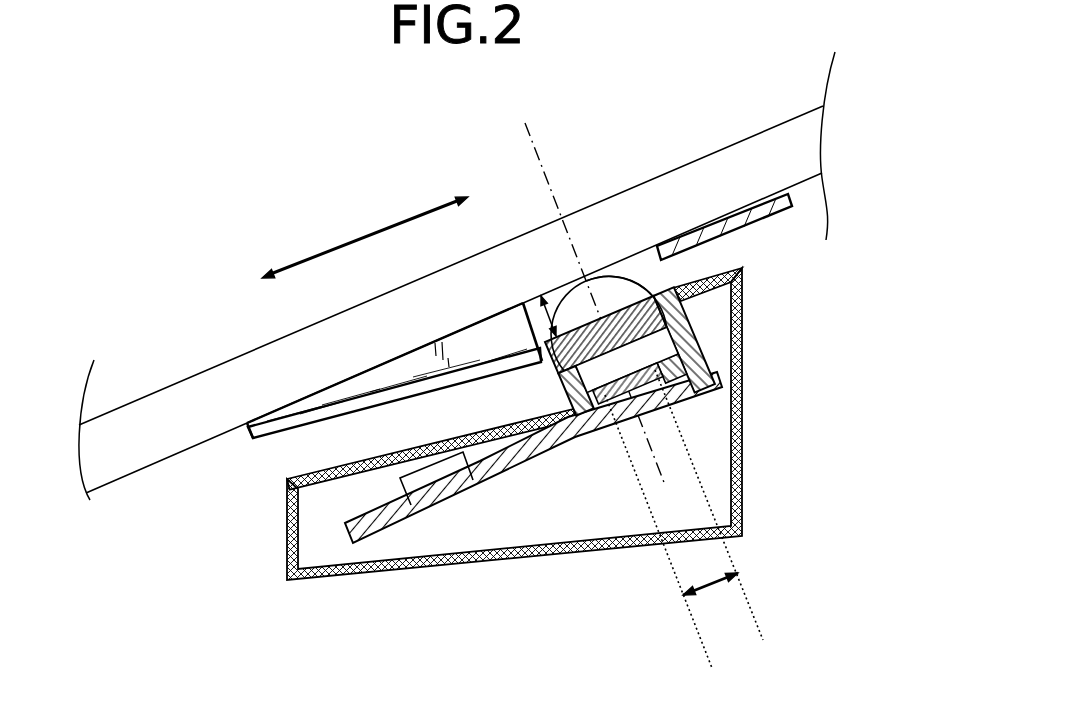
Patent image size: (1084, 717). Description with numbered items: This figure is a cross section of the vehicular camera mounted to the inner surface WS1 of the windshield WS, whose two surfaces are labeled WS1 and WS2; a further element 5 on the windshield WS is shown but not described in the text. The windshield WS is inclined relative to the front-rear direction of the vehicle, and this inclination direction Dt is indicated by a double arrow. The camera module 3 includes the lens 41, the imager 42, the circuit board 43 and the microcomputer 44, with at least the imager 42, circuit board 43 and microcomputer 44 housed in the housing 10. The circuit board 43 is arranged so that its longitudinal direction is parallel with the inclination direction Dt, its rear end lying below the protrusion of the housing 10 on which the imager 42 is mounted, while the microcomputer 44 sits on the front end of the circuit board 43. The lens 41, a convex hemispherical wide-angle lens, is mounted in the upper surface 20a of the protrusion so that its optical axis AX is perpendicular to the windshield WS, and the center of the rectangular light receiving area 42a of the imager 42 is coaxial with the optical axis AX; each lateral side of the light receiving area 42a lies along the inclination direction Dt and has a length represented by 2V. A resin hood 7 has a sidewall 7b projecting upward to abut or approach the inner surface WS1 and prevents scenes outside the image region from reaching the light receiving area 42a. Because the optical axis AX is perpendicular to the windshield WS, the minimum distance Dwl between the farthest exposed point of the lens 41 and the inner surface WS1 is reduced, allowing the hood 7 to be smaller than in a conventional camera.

The windshield WS is at (740, 141).
The inner surface of the windshield WS1 is at (110, 484).
The windshield inner surface WS2 is at (158, 392).
The camera module 3 is at (534, 374).
The light shielding layer 5 is at (730, 222).
The hood 7 is at (282, 428).
The sidewall 7b is at (518, 304).
The housing 10 is at (744, 292).
The upper surface of the protrusion 20a is at (668, 284).
The lens 41 is at (610, 279).
The imager 42 is at (690, 371).
The light receiving area 42a is at (660, 369).
The circuit board 43 is at (428, 503).
The microcomputer 44 is at (443, 468).
The optical axis AX is at (524, 128).
The inclination direction Dt is at (332, 252).
The minimum distance Dwl is at (540, 318).
The length of lateral side of light receiving area 2V is at (684, 519).